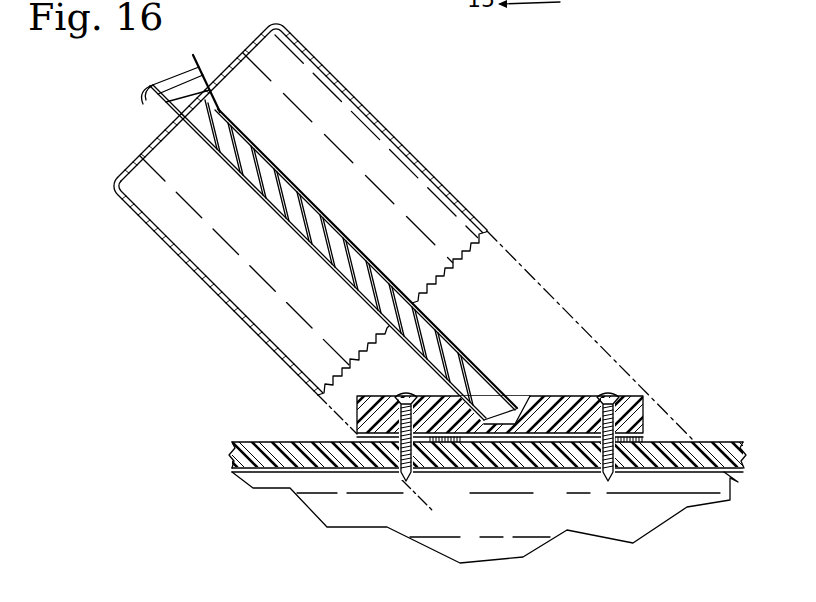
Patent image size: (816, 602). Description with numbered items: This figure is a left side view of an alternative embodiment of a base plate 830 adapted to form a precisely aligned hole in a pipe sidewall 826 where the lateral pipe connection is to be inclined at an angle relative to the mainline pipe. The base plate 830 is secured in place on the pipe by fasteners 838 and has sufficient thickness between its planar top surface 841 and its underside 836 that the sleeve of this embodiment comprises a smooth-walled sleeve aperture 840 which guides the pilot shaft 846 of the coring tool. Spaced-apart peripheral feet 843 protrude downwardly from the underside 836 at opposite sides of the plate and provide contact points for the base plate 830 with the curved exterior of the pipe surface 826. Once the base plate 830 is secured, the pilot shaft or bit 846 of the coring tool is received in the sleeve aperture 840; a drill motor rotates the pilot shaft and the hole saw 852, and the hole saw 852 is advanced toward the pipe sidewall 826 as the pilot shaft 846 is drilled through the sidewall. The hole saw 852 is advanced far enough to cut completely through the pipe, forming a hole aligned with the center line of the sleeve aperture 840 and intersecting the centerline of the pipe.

The pipe sidewall 826 is at (697, 442).
The base plate 830 is at (667, 391).
The underside 836 is at (583, 437).
The fasteners 838 is at (600, 408).
The sleeve aperture 840 is at (511, 415).
The planar top surface 841 is at (437, 396).
The peripheral feet 843 is at (474, 440).
The pilot shaft 846 is at (268, 158).
The hole saw 852 is at (190, 267).